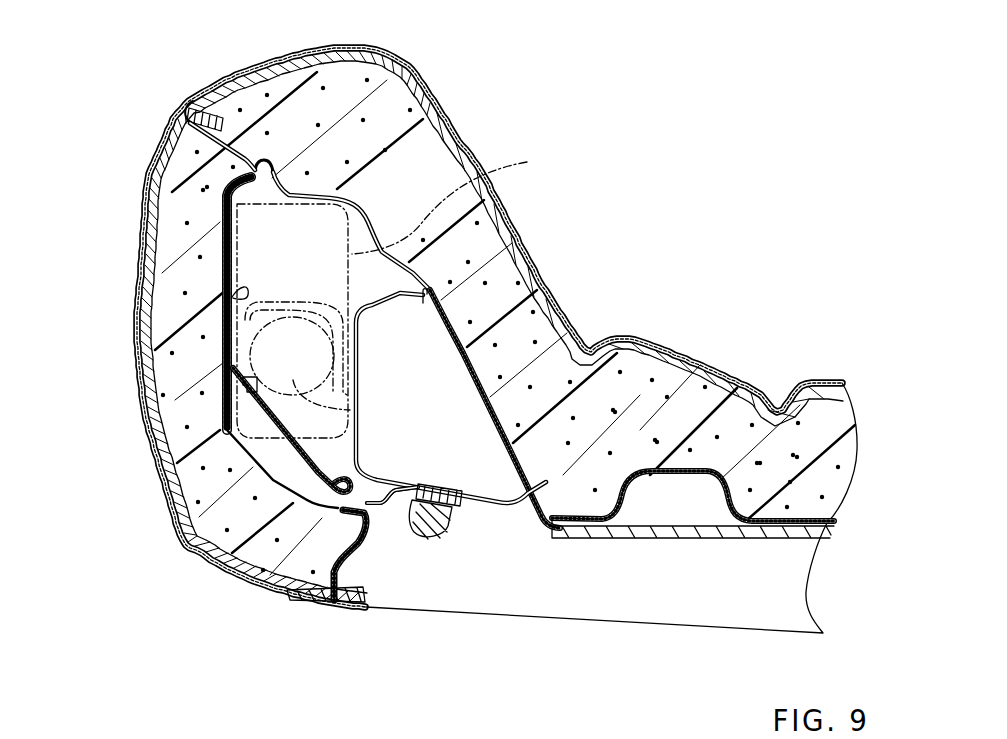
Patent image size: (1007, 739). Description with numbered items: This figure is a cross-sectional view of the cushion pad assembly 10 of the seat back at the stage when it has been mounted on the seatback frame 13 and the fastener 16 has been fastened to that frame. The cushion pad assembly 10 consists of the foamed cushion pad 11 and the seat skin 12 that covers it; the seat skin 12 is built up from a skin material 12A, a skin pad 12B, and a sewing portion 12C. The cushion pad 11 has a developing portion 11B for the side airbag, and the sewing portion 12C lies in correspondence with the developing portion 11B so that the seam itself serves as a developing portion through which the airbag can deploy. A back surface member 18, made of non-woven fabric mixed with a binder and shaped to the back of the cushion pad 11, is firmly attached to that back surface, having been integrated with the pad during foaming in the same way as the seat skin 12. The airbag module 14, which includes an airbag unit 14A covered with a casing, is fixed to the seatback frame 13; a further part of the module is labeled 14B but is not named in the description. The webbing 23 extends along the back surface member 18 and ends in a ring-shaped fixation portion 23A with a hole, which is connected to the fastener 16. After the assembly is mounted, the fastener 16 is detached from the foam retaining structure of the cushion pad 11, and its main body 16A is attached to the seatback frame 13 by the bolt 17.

The cushion pad assembly 10 is at (716, 350).
The cushion pad 11 is at (430, 150).
The developing portion 11B is at (276, 168).
The seat skin 12 is at (195, 90).
The skin material 12A is at (152, 186).
The skin pad 12B is at (150, 256).
The sewing portion 12C is at (214, 112).
The seatback frame 13 is at (520, 527).
The airbag module 14 is at (360, 280).
The airbag unit 14A is at (295, 385).
The airbag module phantom line 14B is at (463, 198).
The fastener 16 is at (472, 532).
The main body 16A is at (433, 594).
The bolt 17 is at (430, 540).
The back surface member 18 is at (226, 372).
The webbing 23 is at (232, 310).
The fixation portion 23A is at (340, 500).